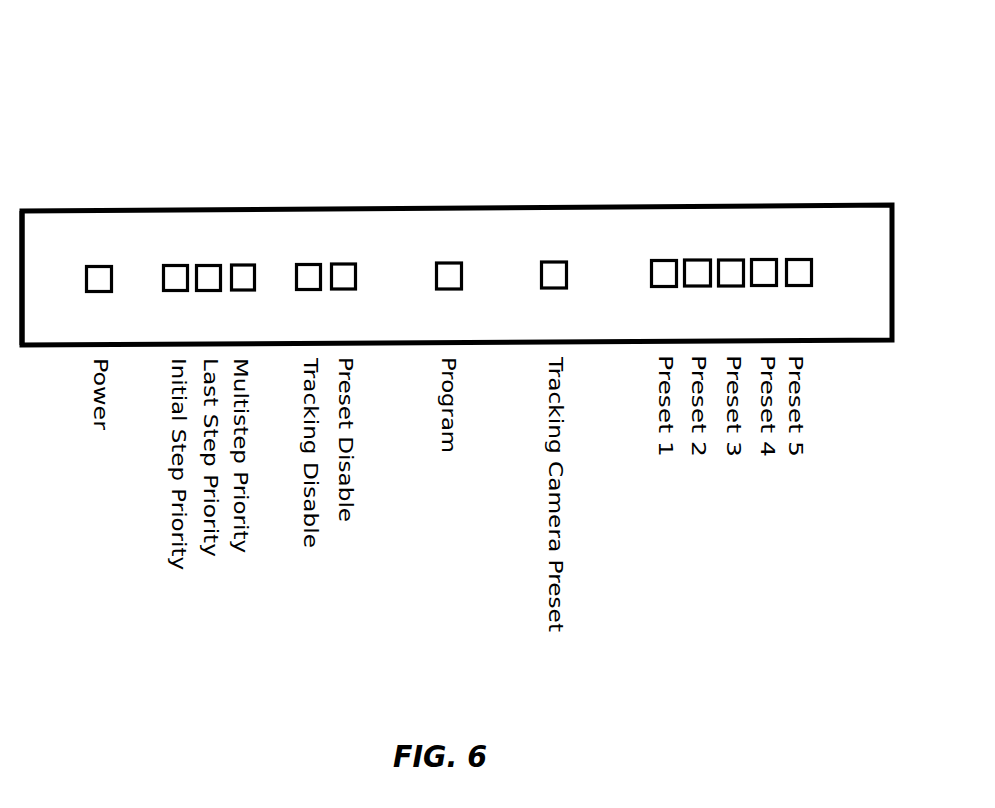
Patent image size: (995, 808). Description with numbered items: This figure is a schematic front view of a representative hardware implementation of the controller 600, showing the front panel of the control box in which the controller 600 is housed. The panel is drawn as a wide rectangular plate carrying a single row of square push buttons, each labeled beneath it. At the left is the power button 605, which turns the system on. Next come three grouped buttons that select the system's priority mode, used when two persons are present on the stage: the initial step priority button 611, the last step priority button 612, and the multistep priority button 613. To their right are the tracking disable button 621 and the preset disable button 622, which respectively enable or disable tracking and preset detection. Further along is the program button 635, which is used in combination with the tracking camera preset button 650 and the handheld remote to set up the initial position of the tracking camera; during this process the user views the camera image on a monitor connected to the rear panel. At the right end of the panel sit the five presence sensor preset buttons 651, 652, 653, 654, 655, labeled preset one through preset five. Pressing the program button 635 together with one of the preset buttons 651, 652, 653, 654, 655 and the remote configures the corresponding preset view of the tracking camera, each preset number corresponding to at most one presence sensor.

The controller 600 is at (457, 353).
The power button 605 is at (61, 234).
The initial step priority button 611 is at (120, 221).
The last step priority button 612 is at (144, 204).
The multistep priority button 613 is at (174, 191).
The tracking disable button 621 is at (267, 224).
The preset disable button 622 is at (292, 206).
The program button 635 is at (405, 222).
The tracking camera preset button 650 is at (510, 222).
The preset button 651 is at (608, 216).
The preset button 652 is at (634, 199).
The preset button 653 is at (663, 187).
The preset button 654 is at (690, 174).
The preset button 655 is at (720, 162).